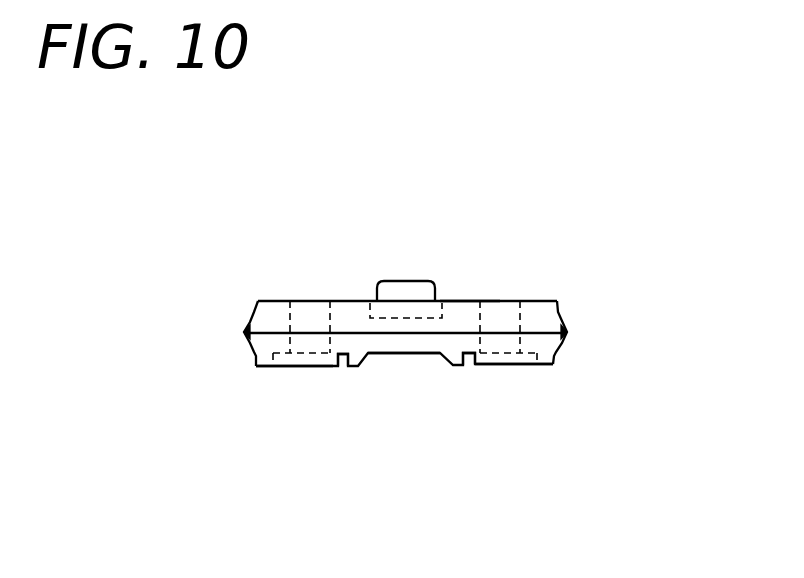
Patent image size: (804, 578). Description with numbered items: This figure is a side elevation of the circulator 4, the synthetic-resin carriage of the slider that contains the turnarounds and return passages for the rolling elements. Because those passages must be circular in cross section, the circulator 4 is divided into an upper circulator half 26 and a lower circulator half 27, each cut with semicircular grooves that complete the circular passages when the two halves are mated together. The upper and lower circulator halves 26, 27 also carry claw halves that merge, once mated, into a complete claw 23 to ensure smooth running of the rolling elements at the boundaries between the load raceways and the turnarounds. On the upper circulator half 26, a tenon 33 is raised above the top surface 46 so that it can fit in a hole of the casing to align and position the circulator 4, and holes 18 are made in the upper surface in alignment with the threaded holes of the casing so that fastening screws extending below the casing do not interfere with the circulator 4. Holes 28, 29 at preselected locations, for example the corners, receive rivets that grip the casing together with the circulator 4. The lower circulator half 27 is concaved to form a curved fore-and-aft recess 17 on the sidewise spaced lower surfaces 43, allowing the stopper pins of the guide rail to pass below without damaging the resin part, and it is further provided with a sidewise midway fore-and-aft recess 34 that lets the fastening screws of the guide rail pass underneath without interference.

The circulator 4 is at (487, 293).
The fore-and-aft recess 17 is at (300, 363).
The hole 18 is at (373, 308).
The claw 23 is at (247, 331).
The upper circulator half 26 is at (270, 312).
The lower circulator half 27 is at (548, 350).
The hole 28 is at (307, 313).
The hole 29 is at (337, 367).
The tenon 33 is at (417, 287).
The fore-and-aft recess 34 is at (395, 355).
The lower surface 43 is at (312, 363).
The top surface 46 is at (465, 302).